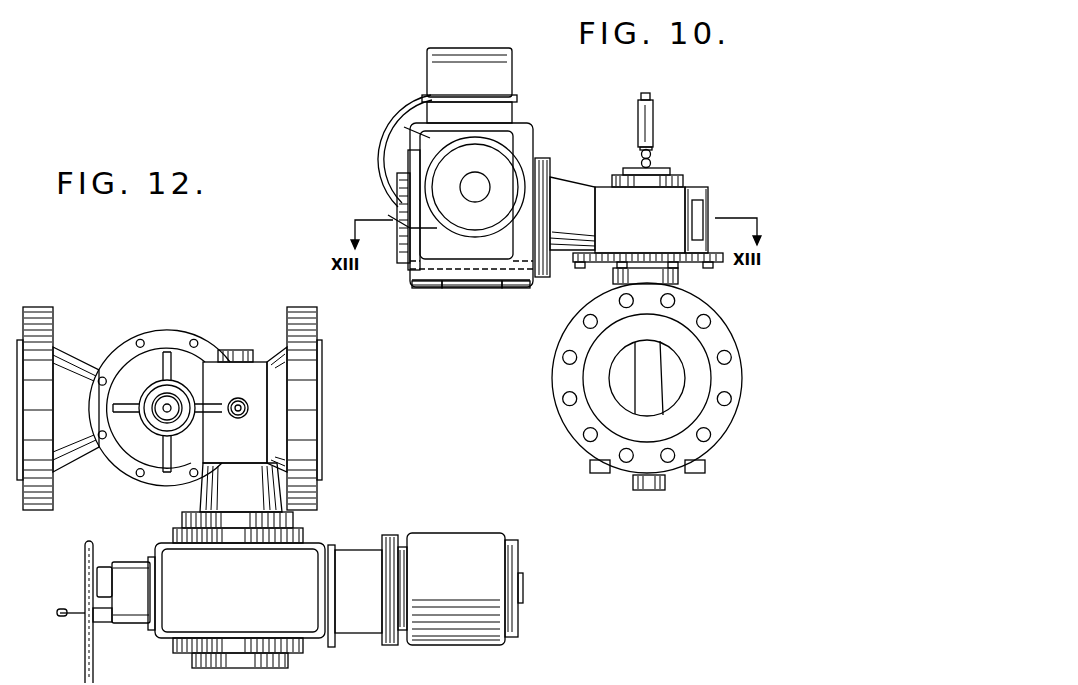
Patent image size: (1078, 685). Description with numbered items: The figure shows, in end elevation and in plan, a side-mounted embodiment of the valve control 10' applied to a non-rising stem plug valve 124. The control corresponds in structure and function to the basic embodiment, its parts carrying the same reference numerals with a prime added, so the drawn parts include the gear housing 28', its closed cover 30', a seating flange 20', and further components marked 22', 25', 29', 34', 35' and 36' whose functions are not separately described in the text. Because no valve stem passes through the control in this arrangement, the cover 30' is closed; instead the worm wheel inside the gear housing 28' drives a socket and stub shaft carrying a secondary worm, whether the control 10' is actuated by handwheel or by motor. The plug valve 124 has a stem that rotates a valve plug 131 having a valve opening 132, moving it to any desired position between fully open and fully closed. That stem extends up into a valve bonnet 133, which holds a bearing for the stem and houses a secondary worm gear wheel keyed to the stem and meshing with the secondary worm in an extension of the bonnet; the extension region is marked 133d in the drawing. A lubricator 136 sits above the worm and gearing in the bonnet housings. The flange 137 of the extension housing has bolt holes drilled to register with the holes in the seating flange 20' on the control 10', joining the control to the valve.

In FIG. 10, the valve control 10' is at (471, 205).
In FIG. 12, the valve control 10' is at (240, 590).
In FIG. 10, the seating flange 20' is at (509, 296).
In FIG. 12, the seating flange 20' is at (218, 498).
In FIG. 10, the electric motor 22' is at (495, 178).
In FIG. 12, the electric motor 22' is at (465, 589).
In FIG. 10, the coupling / gear housing 25' is at (386, 197).
In FIG. 12, the coupling / gear housing 25' is at (367, 591).
In FIG. 10, the gear housing 28' is at (471, 296).
In FIG. 10, the cover 29' is at (449, 73).
In FIG. 12, the cover 29' is at (263, 574).
In FIG. 10, the cover 30' is at (408, 296).
In FIG. 12, the cover 30' is at (216, 656).
In FIG. 12, the handwheel hub 34' is at (124, 580).
In FIG. 10, the handwheel 35' is at (396, 157).
In FIG. 12, the handwheel 35' is at (65, 612).
In FIG. 12, the declutch lever 36' is at (97, 630).
In FIG. 10, the plug valve 124 is at (712, 437).
In FIG. 10, the valve plug 131 is at (670, 375).
In FIG. 10, the valve opening 132 is at (652, 360).
In FIG. 10, the valve bonnet 133 is at (672, 176).
In FIG. 12, the valve bonnet 133 is at (148, 368).
In FIG. 12, the valve body boss 133d is at (255, 378).
In FIG. 10, the lubricator 136 is at (655, 140).
In FIG. 12, the lubricator 136 is at (246, 409).
In FIG. 10, the flange 137 is at (540, 281).
In FIG. 12, the flange 137 is at (300, 525).